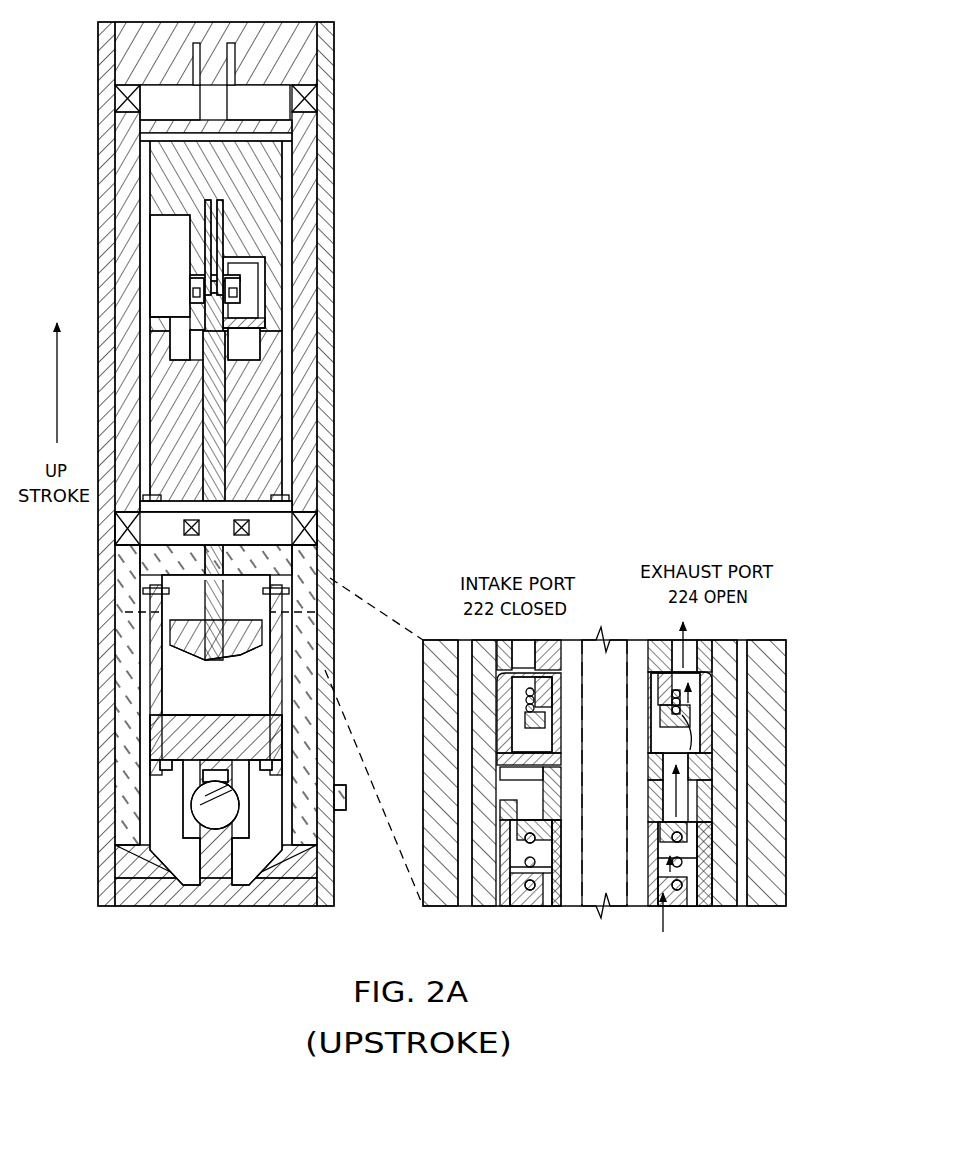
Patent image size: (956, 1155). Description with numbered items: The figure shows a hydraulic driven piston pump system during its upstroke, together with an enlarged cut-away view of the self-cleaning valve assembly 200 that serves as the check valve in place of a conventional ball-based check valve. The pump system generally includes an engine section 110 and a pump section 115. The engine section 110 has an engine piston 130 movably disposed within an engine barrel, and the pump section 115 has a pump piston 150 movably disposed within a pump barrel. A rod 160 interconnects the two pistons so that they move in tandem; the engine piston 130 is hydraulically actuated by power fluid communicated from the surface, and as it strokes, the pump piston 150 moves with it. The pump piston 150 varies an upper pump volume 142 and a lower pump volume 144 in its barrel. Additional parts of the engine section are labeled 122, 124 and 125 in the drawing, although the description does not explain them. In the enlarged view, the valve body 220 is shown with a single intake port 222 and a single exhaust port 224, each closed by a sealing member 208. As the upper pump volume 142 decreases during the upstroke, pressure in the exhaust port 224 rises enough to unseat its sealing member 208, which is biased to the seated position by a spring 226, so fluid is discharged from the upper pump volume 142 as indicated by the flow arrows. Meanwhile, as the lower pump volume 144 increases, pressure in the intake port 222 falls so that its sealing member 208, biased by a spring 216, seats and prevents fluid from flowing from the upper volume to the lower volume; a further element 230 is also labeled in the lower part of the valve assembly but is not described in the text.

The engine section 110 is at (131, 241).
The pump section 115 is at (128, 575).
The valve rod 122 is at (224, 185).
The valve assembly 124 is at (268, 433).
The seal 125 is at (282, 497).
The engine piston 130 is at (264, 233).
The upper pump volume 142 is at (178, 555).
The lower pump volume 144 is at (224, 752).
The pump piston 150 is at (183, 678).
The rod 160 is at (213, 385).
The valve assembly 200 is at (333, 532).
The sealing member 208 is at (512, 830).
The spring 216 is at (507, 910).
The valve body 220 is at (561, 795).
The intake port 222 is at (512, 775).
The exhaust port 224 is at (693, 750).
The spring 226 is at (690, 698).
The lower seal 230 is at (672, 862).